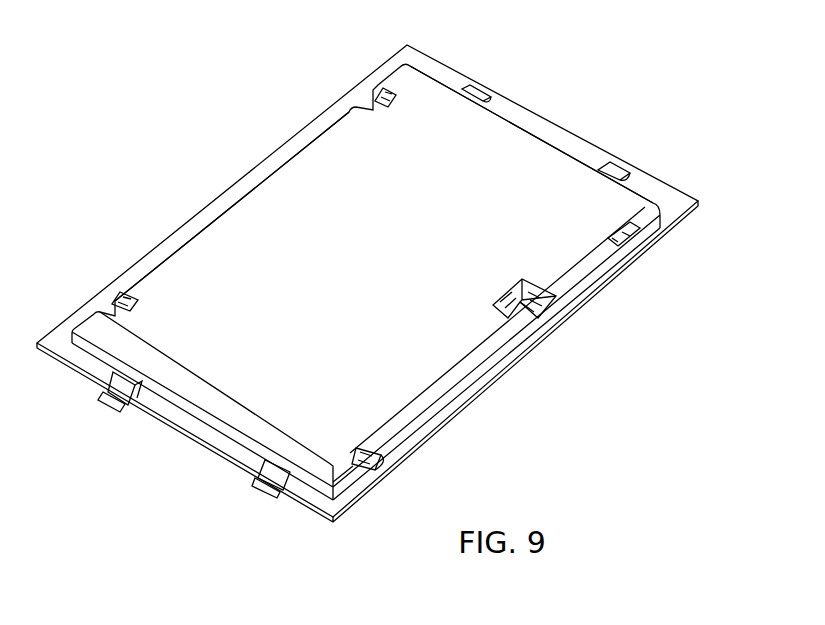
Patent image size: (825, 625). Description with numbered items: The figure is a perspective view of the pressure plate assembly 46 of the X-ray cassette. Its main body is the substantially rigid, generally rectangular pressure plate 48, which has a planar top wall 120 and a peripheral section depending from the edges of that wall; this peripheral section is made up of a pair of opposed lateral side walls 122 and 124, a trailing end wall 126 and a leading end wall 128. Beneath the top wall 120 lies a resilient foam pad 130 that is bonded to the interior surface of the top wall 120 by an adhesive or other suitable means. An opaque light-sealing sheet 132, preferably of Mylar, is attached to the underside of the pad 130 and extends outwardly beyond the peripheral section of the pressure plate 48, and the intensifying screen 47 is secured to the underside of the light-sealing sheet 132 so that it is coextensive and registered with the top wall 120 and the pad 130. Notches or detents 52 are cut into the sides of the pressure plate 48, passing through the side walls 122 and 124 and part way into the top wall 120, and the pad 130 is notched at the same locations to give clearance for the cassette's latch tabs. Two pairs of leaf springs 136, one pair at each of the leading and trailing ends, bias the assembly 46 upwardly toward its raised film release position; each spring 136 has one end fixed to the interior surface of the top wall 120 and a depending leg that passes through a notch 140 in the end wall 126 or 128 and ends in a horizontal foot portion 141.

The pressure plate assembly 46 is at (710, 199).
The intensifying screen 47 is at (538, 318).
The pressure plate 48 is at (640, 200).
The notches or detents 52 is at (380, 93).
The planar top wall 120 is at (366, 258).
The lateral side wall 122 is at (432, 412).
The lateral side wall 124 is at (220, 208).
The trailing end wall 126 is at (560, 150).
The leading end wall 128 is at (214, 423).
The resilient foam pad 130 is at (524, 295).
The opaque light-sealing sheet 132 is at (424, 68).
The leaf spring 136 is at (477, 92).
The notch 140 is at (144, 386).
The horizontal foot portion 141 is at (118, 404).